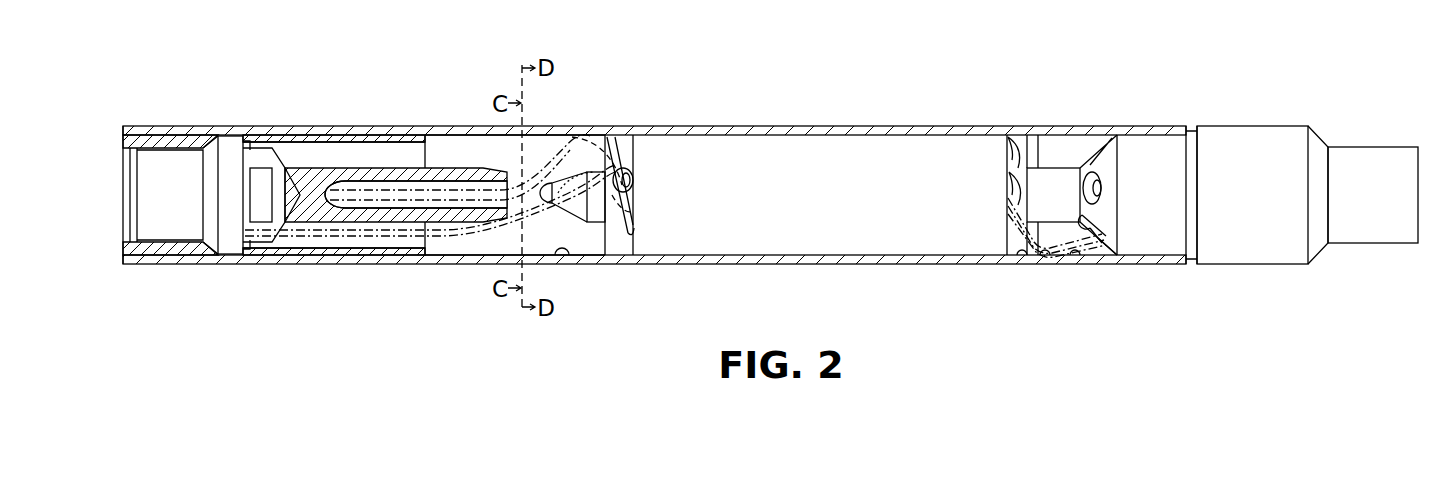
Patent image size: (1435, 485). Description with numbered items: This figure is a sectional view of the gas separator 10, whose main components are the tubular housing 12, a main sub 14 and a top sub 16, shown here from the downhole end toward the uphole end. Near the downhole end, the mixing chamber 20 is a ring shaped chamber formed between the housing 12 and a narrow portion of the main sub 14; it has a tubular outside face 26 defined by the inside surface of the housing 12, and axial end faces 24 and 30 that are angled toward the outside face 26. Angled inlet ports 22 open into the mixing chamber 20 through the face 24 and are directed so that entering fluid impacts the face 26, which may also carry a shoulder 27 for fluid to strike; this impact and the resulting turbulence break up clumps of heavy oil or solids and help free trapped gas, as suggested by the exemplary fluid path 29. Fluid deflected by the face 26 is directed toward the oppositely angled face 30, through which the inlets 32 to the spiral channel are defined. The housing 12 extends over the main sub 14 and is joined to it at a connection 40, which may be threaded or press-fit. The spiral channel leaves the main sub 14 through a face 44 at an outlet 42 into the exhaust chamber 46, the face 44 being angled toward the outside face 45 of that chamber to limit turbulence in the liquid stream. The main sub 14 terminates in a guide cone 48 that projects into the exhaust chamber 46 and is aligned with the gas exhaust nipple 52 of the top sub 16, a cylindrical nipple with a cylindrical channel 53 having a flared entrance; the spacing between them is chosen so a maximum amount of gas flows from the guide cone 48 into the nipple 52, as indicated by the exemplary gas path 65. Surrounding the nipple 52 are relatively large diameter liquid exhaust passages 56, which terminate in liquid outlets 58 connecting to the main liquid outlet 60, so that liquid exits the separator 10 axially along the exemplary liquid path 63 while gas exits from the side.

The separator 10 is at (910, 57).
The tubular housing 12 is at (797, 127).
The main sub 14 is at (1243, 127).
The top sub 16 is at (285, 127).
The mixing chamber 20 is at (1060, 142).
The inlet ports 22 is at (1086, 170).
The axial end face 24 is at (1100, 250).
The tubular outside face 26 is at (1074, 254).
The shoulder 27 is at (1017, 254).
The fluid path 29 is at (1046, 254).
The face 30 is at (1017, 140).
The inlets 32 is at (1020, 180).
The connection 40 is at (1190, 127).
The outlet 42 is at (612, 172).
The face 44 is at (622, 175).
The outside face 45 is at (567, 250).
The exhaust chamber 46 is at (470, 146).
The guide cone 48 is at (560, 183).
The gas exhaust nipple 52 is at (446, 168).
The cylindrical channel 53 is at (410, 185).
The liquid exhaust passages 56 is at (330, 155).
The liquid outlets 58 is at (262, 152).
The main liquid outlet 60 is at (124, 173).
The liquid path 63 is at (332, 238).
The gas path 65 is at (440, 202).